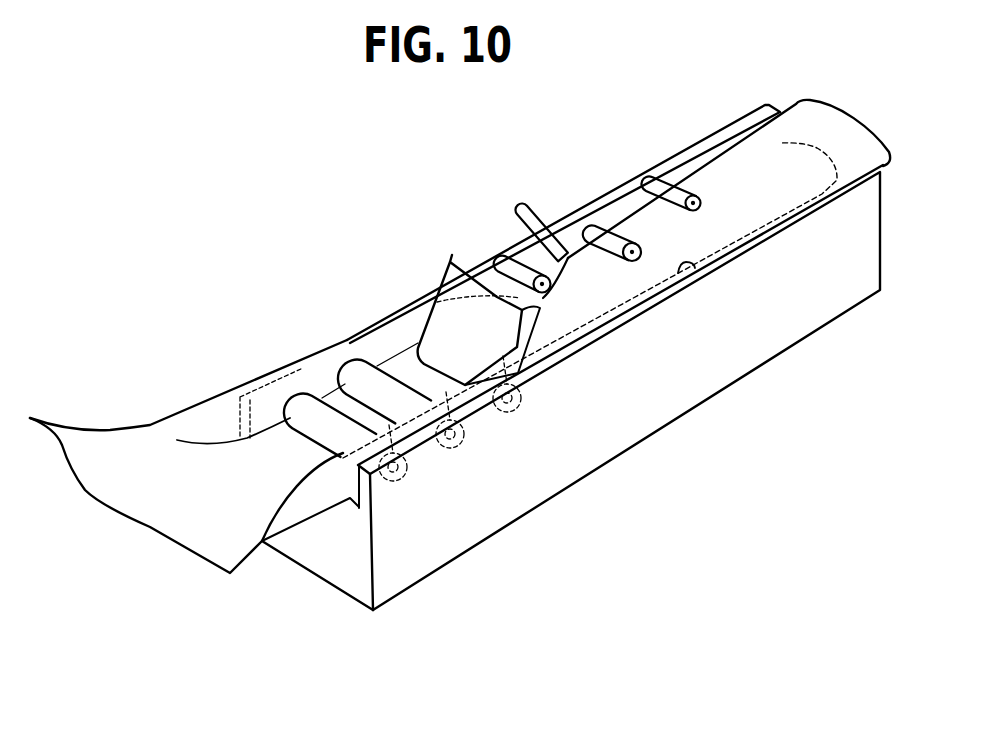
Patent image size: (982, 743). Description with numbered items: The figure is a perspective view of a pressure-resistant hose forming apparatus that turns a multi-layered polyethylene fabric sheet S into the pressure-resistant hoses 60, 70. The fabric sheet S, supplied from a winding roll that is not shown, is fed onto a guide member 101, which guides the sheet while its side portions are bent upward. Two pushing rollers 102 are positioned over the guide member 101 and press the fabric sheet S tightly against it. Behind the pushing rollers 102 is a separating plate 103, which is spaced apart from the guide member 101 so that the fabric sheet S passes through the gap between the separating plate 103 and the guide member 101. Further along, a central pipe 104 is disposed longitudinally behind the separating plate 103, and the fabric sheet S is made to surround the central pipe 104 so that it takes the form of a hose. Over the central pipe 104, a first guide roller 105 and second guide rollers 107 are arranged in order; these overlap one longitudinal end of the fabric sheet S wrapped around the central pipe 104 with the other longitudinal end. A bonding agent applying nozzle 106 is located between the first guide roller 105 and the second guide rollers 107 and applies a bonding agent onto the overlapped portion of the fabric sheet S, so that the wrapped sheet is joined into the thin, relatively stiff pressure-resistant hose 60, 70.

The polyethylene fabric sheet S is at (162, 515).
The guide member 101 is at (320, 560).
The pushing rollers 102 is at (357, 378).
The separating plate 103 is at (449, 279).
The central pipe 104 is at (684, 268).
The first guide roller 105 is at (500, 262).
The bonding agent applying nozzle 106 is at (530, 215).
The second guide rollers 107 is at (596, 228).
The pressure-resistant hose 60 is at (627, 204).
The pressure-resistant hose 70 is at (848, 127).